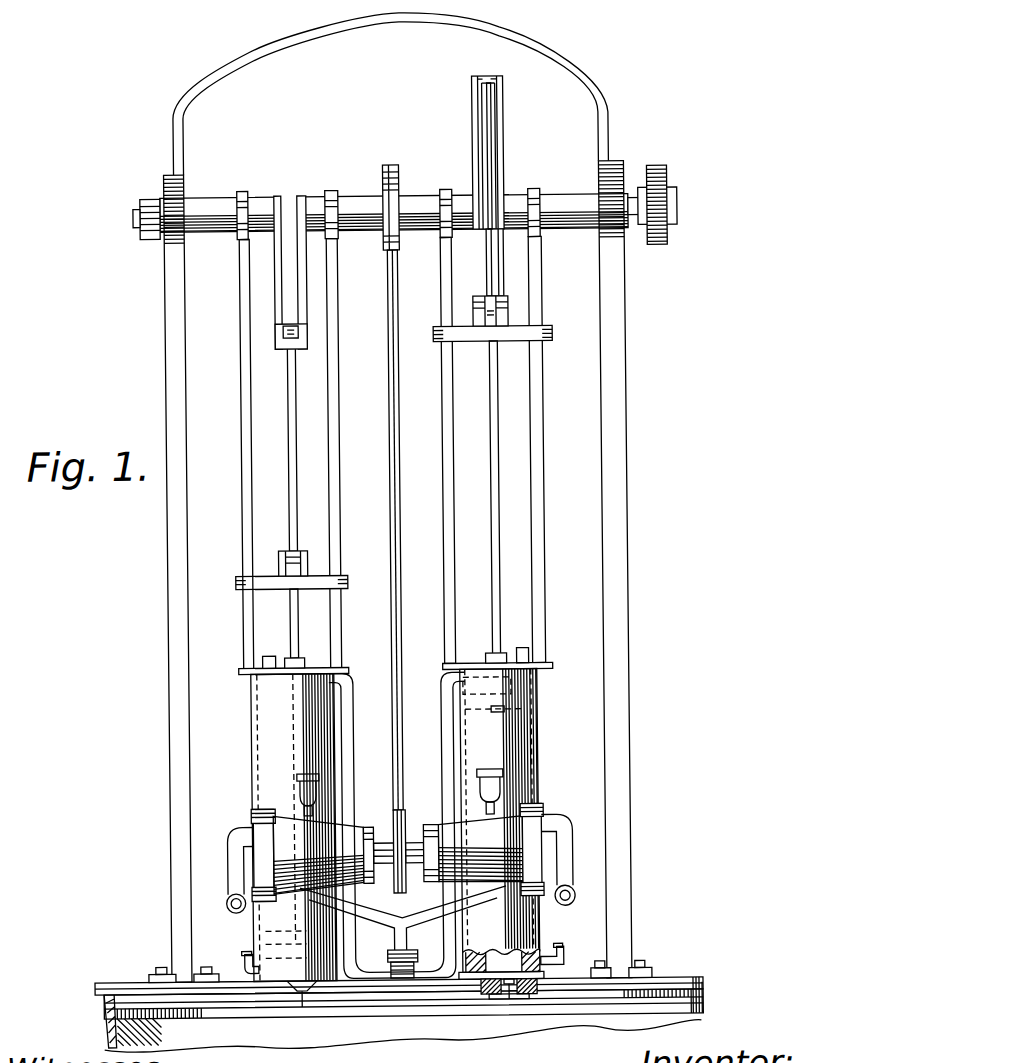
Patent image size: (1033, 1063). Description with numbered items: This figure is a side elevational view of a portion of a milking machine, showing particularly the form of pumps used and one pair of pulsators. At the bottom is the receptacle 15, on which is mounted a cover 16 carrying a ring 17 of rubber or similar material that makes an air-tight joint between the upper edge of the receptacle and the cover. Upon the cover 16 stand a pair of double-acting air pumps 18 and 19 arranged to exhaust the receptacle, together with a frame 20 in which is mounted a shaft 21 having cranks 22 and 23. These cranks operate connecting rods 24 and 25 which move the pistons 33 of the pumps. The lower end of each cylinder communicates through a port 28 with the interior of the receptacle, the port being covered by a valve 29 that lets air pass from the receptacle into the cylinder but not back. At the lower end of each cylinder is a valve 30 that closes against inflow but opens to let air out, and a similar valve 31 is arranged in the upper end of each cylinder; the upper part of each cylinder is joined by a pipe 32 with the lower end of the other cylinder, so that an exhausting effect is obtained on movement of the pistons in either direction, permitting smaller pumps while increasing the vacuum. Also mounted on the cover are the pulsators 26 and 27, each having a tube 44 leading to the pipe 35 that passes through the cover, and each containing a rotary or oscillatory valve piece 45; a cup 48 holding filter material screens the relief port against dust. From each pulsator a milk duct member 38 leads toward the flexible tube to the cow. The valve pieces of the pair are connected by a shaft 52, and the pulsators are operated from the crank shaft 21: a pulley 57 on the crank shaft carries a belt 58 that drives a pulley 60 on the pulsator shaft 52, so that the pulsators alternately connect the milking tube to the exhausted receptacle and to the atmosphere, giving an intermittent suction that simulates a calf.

The receptacle 15 is at (428, 1020).
The cover 16 is at (672, 979).
The ring 17 is at (100, 995).
The double-acting air pump 18 is at (518, 738).
The double-acting air pump 19 is at (273, 782).
The frame 20 is at (629, 547).
The shaft 21 is at (561, 197).
The crank 22 is at (503, 105).
The crank 23 is at (280, 306).
The connecting rod 24 is at (500, 487).
The connecting rod 25 is at (492, 137).
The pulsator 26 is at (502, 833).
The pulsator 27 is at (280, 848).
The port 28 is at (515, 997).
The valve 29 is at (488, 996).
The valve 30 is at (242, 953).
The valve 31 is at (266, 655).
The pipe 32 is at (342, 728).
The piston 33 is at (505, 688).
The pipe 35 is at (400, 935).
The member 38 is at (226, 895).
The tube 44 is at (399, 866).
The valve piece 45 is at (490, 775).
The cup 48 is at (297, 775).
The shaft 52 is at (382, 842).
The pulley 57 is at (385, 176).
The belt 58 is at (390, 437).
The pulley 60 is at (404, 813).